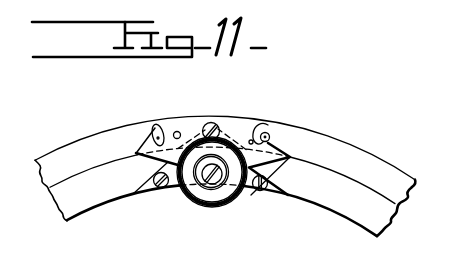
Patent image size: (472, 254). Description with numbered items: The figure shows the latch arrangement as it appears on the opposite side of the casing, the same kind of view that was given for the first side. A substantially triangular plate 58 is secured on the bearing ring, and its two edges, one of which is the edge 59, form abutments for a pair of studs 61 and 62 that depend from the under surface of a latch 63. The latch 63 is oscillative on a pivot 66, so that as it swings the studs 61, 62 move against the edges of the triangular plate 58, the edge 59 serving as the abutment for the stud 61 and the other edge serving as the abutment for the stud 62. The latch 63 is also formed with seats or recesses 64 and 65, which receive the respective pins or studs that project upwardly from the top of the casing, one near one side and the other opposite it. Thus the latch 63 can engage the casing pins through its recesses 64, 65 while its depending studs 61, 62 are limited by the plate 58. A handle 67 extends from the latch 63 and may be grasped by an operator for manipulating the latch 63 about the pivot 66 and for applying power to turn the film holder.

The substantially triangular plate 58 is at (271, 193).
The edge of triangular plate 59 is at (290, 157).
The stud 61 is at (259, 126).
The stud 62 is at (178, 131).
The latch 63 is at (222, 125).
The seat or recess 64 is at (273, 137).
The seat or recess 65 is at (153, 124).
The pivot 66 is at (211, 122).
The handle 67 is at (203, 198).